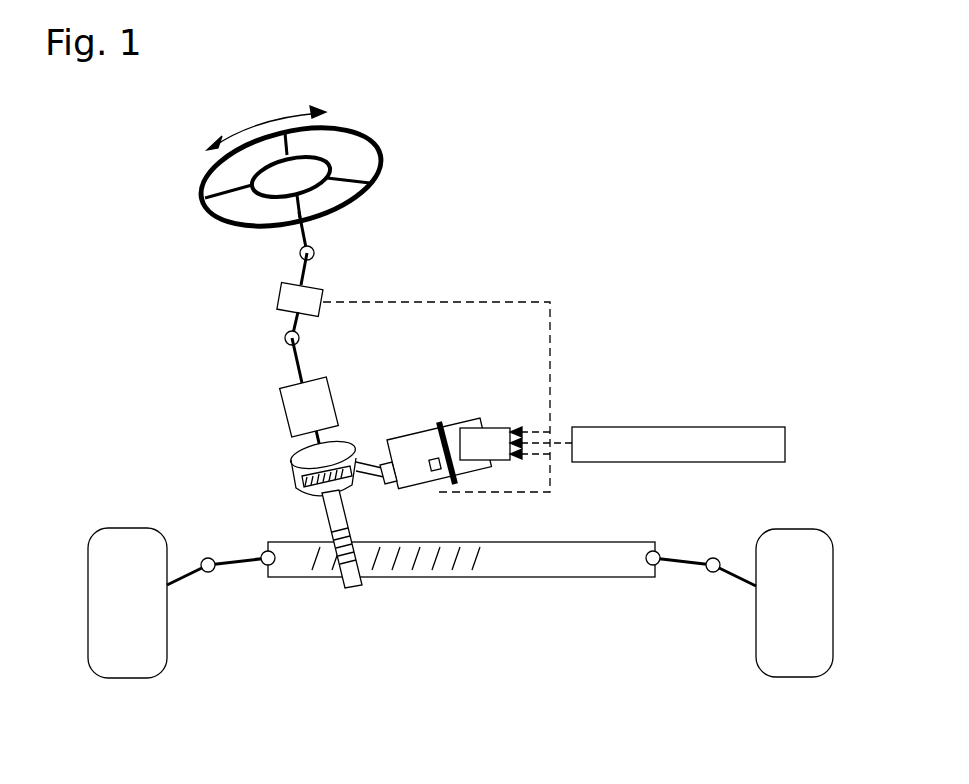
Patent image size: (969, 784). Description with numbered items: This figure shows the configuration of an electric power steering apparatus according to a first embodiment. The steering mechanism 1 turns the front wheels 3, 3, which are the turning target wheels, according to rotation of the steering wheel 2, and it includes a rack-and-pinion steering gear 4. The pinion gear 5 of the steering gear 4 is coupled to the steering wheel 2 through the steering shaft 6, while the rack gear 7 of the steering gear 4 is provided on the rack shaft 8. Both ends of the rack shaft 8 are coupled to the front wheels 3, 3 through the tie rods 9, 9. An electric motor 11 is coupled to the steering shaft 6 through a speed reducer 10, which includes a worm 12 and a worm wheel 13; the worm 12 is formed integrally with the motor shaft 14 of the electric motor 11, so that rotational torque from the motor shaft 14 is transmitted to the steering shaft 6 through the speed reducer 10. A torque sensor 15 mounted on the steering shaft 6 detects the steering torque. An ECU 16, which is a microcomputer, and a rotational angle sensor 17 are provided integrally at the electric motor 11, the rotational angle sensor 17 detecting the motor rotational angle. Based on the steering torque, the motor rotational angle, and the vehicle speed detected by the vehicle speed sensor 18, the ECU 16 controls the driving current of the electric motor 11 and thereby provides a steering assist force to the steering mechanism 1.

The steering mechanism 1 is at (276, 459).
The steering wheel 2 is at (382, 152).
The front wheels 3 is at (120, 528).
The rack-and-pinion steering gear 4 is at (347, 577).
The pinion gear 5 is at (353, 588).
The steering shaft 6 is at (296, 362).
The rack gear 7 is at (402, 565).
The rack shaft 8 is at (461, 567).
The tie rods 9 is at (185, 574).
The speed reducer 10 is at (291, 490).
The electric motor 11 is at (477, 402).
The worm 12 is at (321, 493).
The worm wheel 13 is at (296, 484).
The motor shaft 14 is at (369, 462).
The torque sensor 15 is at (285, 412).
The ECU 16 is at (500, 427).
The rotational angle sensor 17 is at (433, 458).
The vehicle speed sensor 18 is at (664, 427).